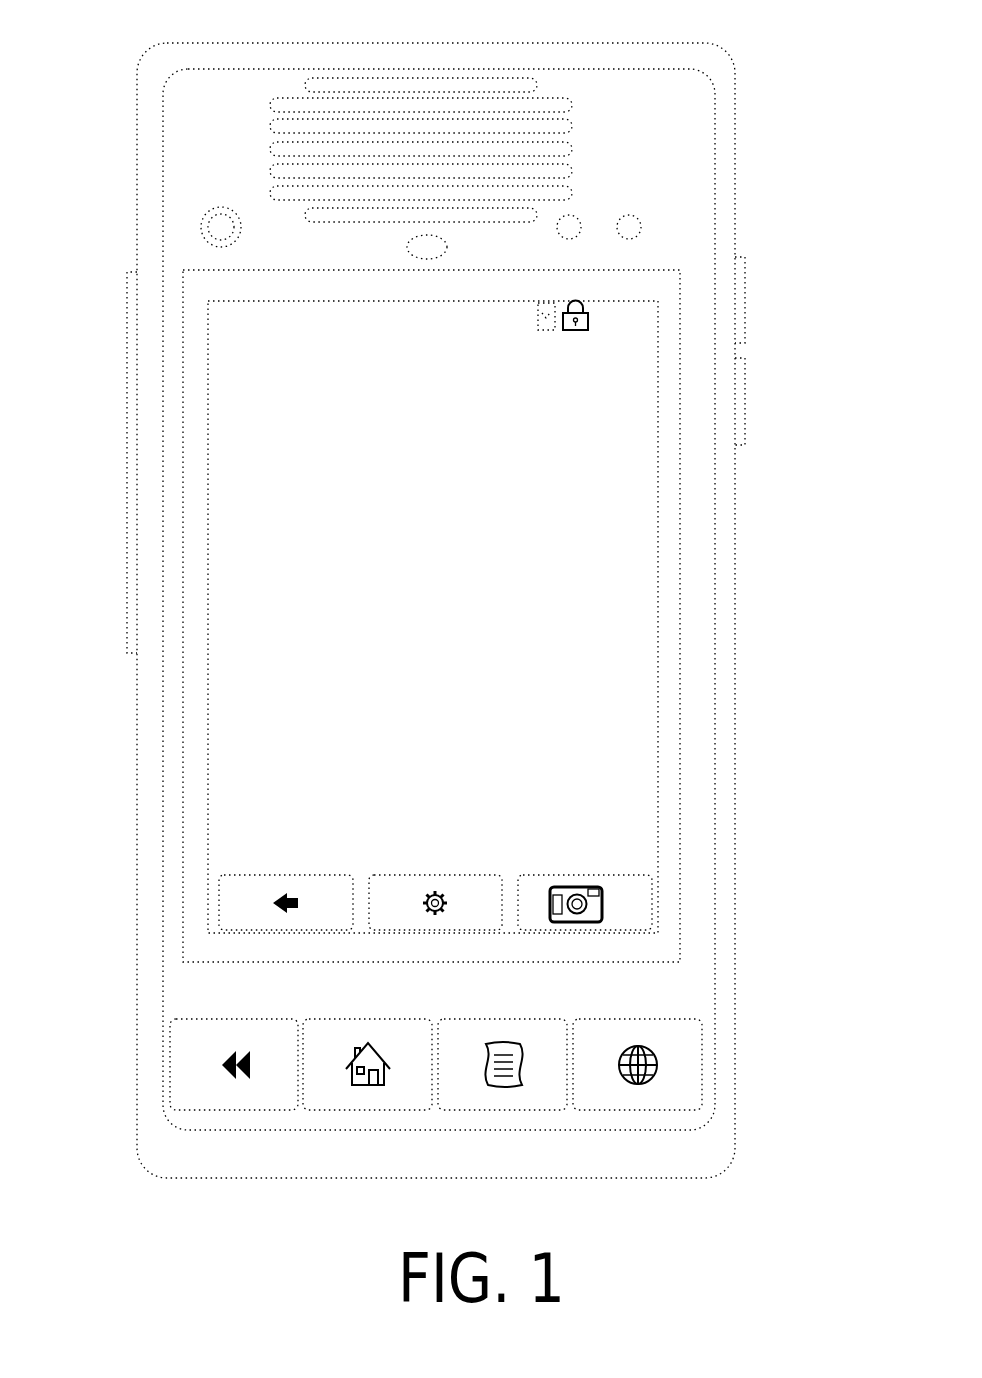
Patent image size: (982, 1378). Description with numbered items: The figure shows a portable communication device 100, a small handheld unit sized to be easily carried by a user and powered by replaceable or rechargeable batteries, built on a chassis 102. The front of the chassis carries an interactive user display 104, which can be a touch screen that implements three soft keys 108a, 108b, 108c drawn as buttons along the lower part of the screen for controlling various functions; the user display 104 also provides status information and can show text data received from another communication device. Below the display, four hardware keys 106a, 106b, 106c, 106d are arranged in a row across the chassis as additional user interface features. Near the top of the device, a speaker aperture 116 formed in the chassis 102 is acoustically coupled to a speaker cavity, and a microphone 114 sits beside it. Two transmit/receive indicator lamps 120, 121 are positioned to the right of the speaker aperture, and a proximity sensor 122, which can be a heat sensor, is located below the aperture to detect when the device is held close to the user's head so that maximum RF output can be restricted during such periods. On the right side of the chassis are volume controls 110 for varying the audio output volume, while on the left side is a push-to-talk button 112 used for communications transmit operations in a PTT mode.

The portable communication device 100 is at (812, 122).
The chassis 102 is at (136, 180).
The user display 104 is at (452, 588).
The hardware key 106a is at (233, 1017).
The hardware key 106b is at (385, 1003).
The hardware key 106c is at (514, 1017).
The hardware key 106d is at (657, 1017).
The soft key 108a is at (312, 858).
The soft key 108b is at (450, 872).
The soft key 108c is at (585, 872).
The volume controls 110 is at (745, 402).
The push-to-talk button 112 is at (127, 485).
The microphone 114 is at (226, 208).
The speaker aperture 116 is at (243, 131).
The transmit/receive indicator lamp 120 is at (563, 239).
The transmit/receive indicator lamp 121 is at (629, 215).
The proximity sensor 122 is at (407, 247).